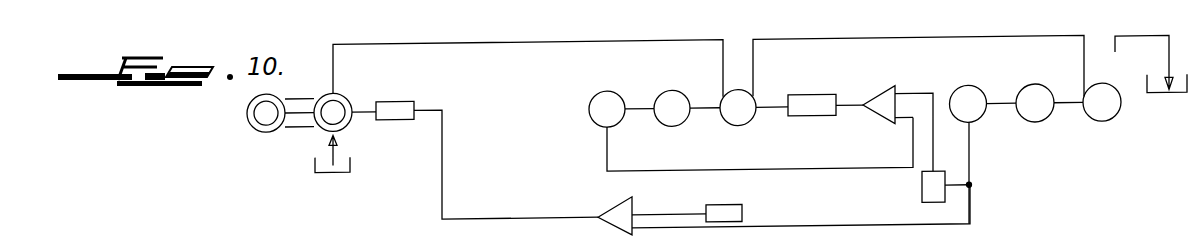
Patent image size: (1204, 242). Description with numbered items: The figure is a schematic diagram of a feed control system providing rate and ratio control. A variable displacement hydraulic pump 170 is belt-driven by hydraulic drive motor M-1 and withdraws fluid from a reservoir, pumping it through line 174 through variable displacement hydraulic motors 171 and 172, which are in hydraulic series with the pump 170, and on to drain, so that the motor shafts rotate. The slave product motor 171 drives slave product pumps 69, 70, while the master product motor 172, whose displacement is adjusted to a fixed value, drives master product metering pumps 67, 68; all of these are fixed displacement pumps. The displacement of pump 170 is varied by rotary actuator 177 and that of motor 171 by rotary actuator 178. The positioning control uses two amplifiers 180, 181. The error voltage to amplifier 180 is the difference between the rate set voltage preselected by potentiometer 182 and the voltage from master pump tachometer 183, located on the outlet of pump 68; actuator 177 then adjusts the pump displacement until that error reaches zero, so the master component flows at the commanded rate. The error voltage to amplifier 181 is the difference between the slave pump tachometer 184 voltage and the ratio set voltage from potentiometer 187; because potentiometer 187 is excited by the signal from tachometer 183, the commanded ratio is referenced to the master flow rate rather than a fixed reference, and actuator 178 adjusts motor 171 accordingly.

The hydraulic drive motor M-1 is at (256, 125).
The variable displacement hydraulic pump 170 is at (346, 94).
The actuator 177 is at (394, 116).
The line 174 is at (484, 41).
The slave pump tachometer 184 is at (589, 108).
The slave product pump 69 is at (662, 92).
The slave product pump 70 is at (683, 68).
The variable displacement hydraulic motor 171 is at (740, 126).
The actuator 178 is at (814, 97).
The amplifier 181 is at (880, 117).
The master pump tachometer 183 is at (968, 89).
The master product metering pump 67 is at (1059, 125).
The master product metering pump 68 is at (1035, 126).
The variable displacement hydraulic motor 172 is at (1111, 124).
The ratio set potentiometer 187 is at (922, 186).
The amplifier 180 is at (613, 207).
The rate set potentiometer 182 is at (742, 214).